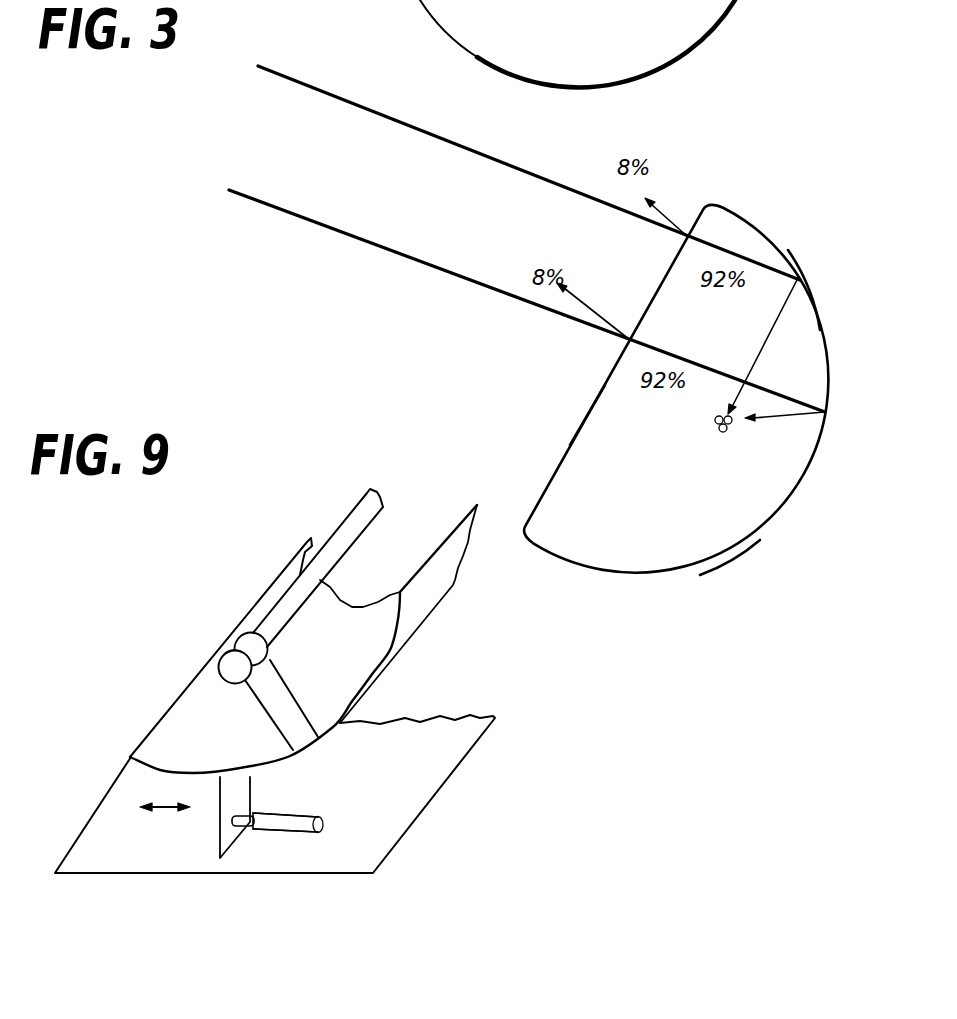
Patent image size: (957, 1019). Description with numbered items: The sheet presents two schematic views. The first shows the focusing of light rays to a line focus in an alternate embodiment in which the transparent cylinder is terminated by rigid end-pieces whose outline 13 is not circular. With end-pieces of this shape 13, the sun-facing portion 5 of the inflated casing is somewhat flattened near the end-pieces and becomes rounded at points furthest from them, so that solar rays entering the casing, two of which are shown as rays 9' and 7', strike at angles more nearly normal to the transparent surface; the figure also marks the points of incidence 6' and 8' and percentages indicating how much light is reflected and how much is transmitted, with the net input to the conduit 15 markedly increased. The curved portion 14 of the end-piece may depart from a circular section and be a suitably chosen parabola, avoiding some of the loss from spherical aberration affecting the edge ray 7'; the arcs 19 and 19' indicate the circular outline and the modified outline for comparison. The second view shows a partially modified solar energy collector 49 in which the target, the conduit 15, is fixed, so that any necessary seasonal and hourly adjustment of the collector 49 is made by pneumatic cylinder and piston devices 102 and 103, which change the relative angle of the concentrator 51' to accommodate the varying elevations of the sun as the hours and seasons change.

In FIG. 3, the sun-facing portion 5 is at (577, 410).
In FIG. 3, the first incidence point 6' is at (649, 227).
In FIG. 3, the solar ray 7' is at (529, 173).
In FIG. 3, the second incidence point 8' is at (581, 321).
In FIG. 3, the solar ray 9' is at (527, 301).
In FIG. 3, the end-piece outline 13 is at (791, 234).
In FIG. 3, the curved portion 14 is at (820, 302).
In FIG. 3, the conduit 15 is at (728, 442).
In FIG. 9, the conduit 15 is at (219, 673).
In FIG. 3, the outer arc 19 is at (602, 43).
In FIG. 3, the plate arc edge 19' is at (751, 544).
In FIG. 9, the solar energy collector 49 is at (249, 554).
In FIG. 9, the concentrator 51' is at (303, 639).
In FIG. 9, the pneumatic cylinder and piston device 102 is at (294, 841).
In FIG. 9, the pneumatic cylinder and piston device 103 is at (242, 836).